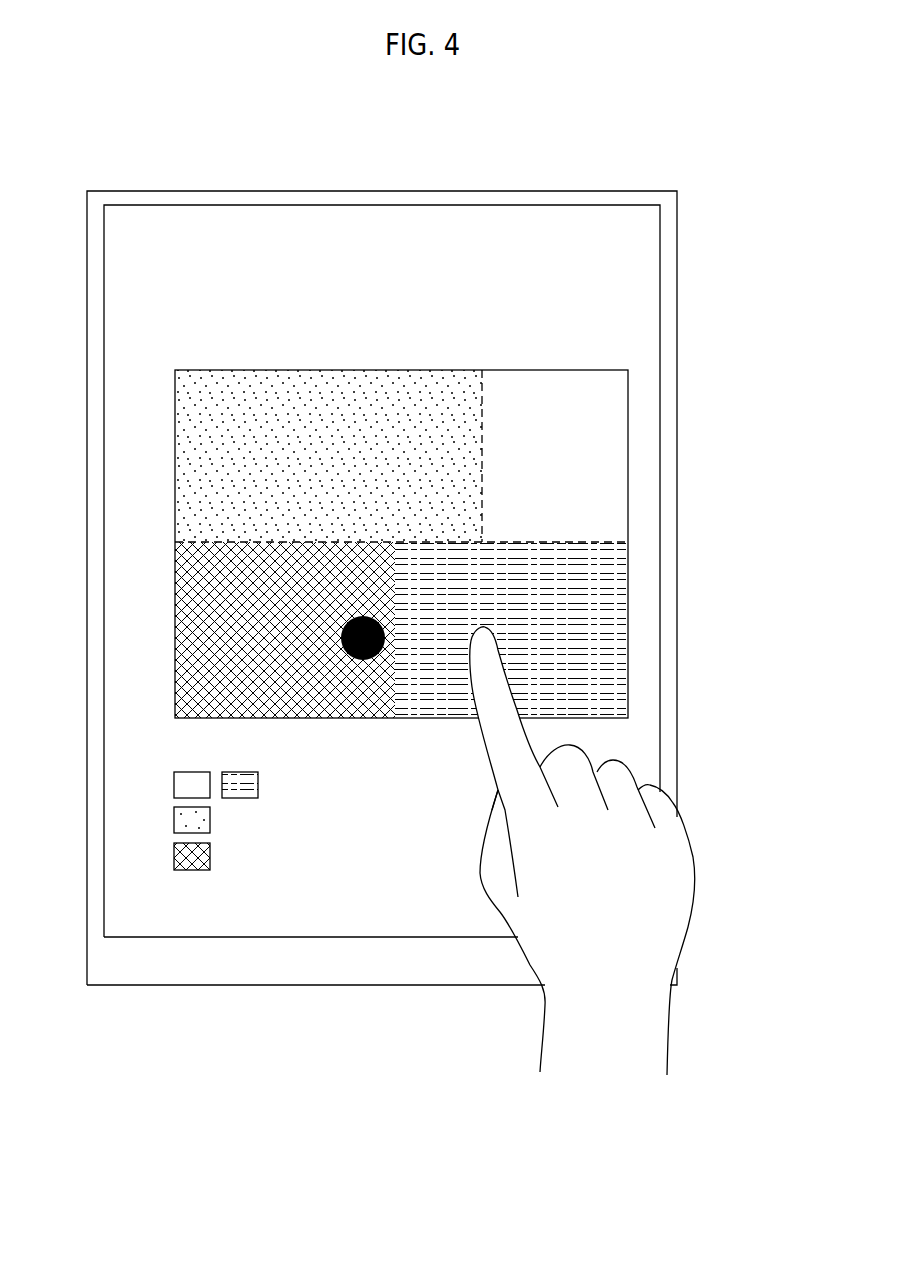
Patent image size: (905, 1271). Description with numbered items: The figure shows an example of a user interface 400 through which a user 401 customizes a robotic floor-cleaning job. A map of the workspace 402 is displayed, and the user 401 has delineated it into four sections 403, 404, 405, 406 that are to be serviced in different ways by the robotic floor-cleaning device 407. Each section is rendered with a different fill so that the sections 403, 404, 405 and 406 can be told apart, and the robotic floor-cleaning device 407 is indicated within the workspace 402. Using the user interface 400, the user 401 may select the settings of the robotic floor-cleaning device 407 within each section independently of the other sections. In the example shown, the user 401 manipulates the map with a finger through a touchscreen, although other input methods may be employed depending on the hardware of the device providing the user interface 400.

The user interface 400 is at (589, 269).
The user 401 is at (582, 851).
The workspace 402 is at (401, 580).
The section 403 is at (555, 456).
The section 404 is at (328, 456).
The section 405 is at (285, 630).
The section 406 is at (511, 630).
The robotic floor-cleaning device 407 is at (363, 660).